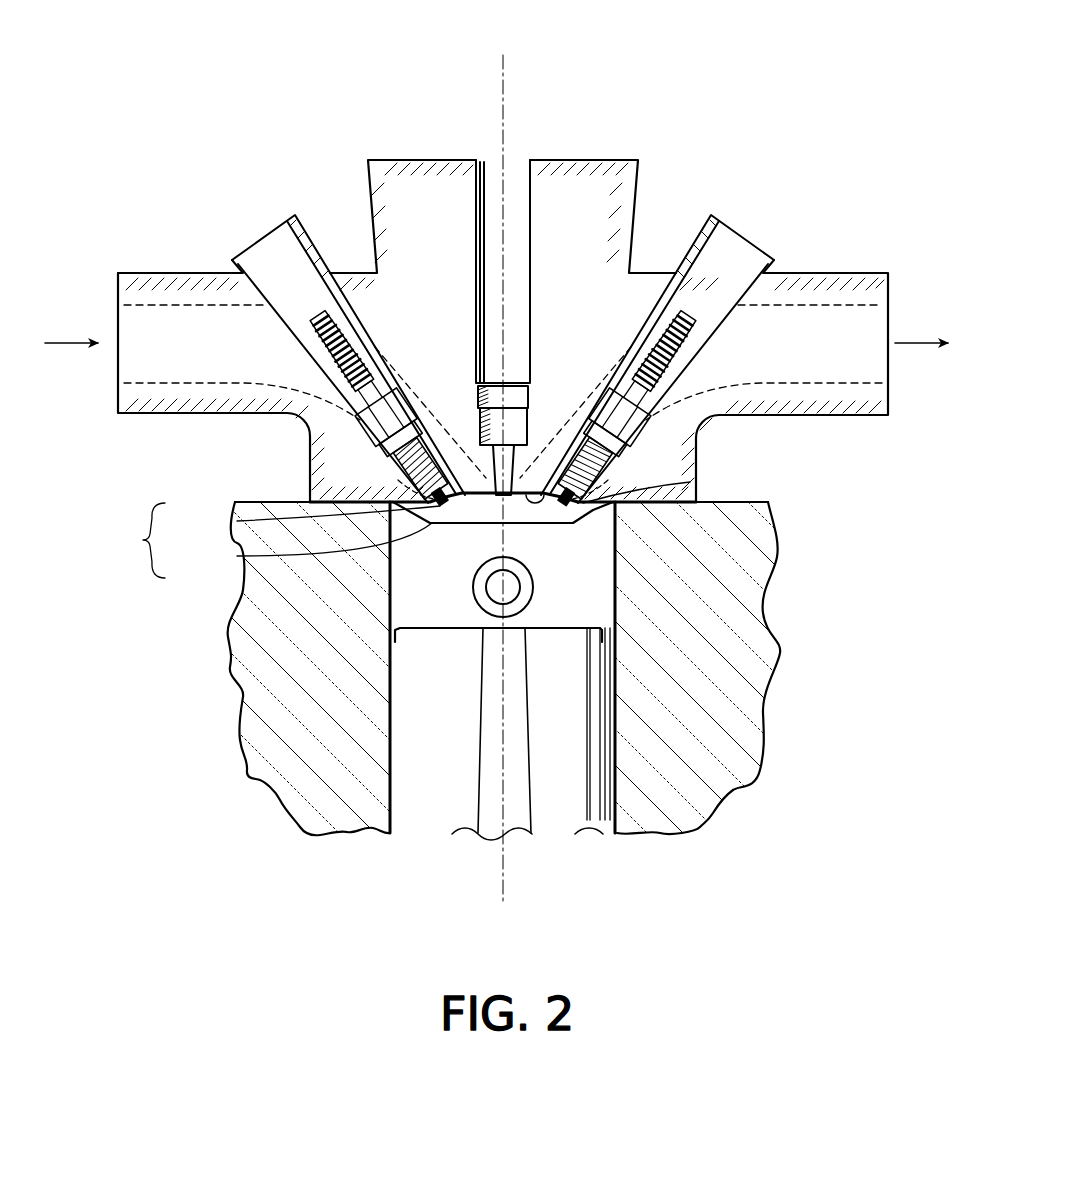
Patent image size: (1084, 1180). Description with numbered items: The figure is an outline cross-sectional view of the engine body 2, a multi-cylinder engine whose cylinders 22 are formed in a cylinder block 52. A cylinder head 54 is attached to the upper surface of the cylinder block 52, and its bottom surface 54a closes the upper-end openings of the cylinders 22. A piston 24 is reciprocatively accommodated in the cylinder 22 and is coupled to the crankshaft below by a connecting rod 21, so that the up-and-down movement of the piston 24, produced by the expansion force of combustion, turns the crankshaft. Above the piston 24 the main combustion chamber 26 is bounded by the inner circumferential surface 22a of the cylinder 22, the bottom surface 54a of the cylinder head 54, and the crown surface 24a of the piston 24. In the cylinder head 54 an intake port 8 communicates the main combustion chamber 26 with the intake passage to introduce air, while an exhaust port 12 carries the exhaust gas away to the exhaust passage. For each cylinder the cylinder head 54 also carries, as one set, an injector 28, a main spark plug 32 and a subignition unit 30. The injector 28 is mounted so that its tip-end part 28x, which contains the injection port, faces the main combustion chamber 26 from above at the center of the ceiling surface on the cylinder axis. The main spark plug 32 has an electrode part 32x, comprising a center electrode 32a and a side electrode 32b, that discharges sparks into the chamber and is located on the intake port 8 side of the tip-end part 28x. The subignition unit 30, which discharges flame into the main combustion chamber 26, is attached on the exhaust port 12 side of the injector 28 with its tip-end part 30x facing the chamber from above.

The engine body 2 is at (597, 113).
The intake port 8 is at (172, 303).
The exhaust port 12 is at (832, 303).
The connecting rod 21 is at (462, 836).
The cylinder 22 is at (446, 809).
The inner circumferential surface 22a is at (600, 835).
The piston 24 is at (578, 640).
The crown surface 24a is at (574, 520).
The main combustion chamber 26 is at (537, 513).
The injector 28 is at (486, 154).
The tip-end part 28x is at (489, 493).
The subignition unit 30 is at (698, 293).
The tip-end part 30x is at (690, 482).
The main spark plug 32 is at (308, 293).
The electrode part 32x is at (130, 540).
The center electrode 32a is at (237, 521).
The side electrode 32b is at (237, 556).
The cylinder block 52 is at (770, 651).
The cylinder head 54 is at (830, 415).
The bottom surface 54a is at (518, 492).